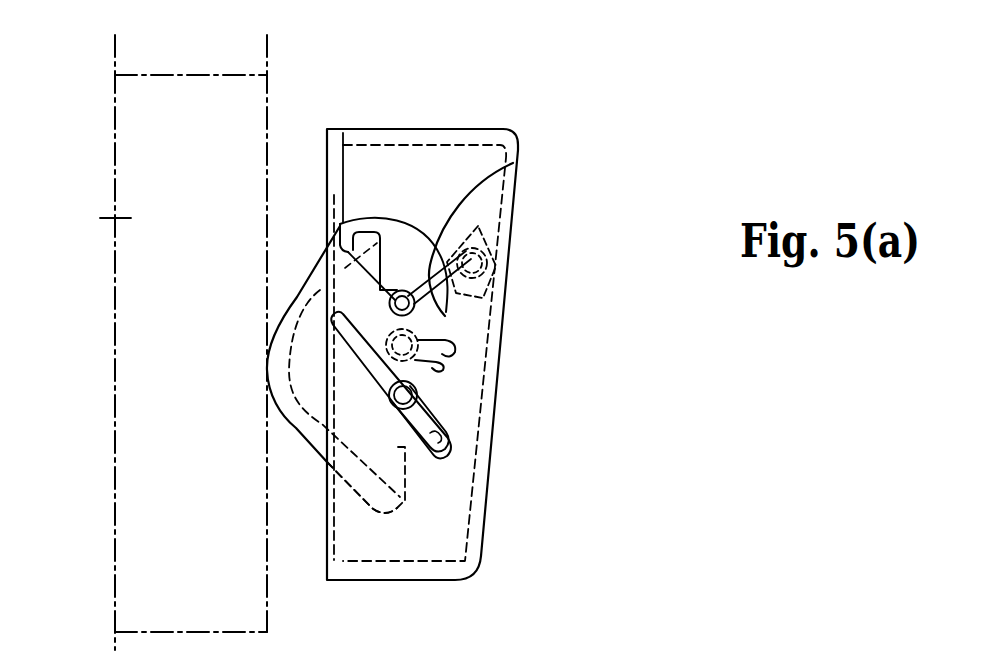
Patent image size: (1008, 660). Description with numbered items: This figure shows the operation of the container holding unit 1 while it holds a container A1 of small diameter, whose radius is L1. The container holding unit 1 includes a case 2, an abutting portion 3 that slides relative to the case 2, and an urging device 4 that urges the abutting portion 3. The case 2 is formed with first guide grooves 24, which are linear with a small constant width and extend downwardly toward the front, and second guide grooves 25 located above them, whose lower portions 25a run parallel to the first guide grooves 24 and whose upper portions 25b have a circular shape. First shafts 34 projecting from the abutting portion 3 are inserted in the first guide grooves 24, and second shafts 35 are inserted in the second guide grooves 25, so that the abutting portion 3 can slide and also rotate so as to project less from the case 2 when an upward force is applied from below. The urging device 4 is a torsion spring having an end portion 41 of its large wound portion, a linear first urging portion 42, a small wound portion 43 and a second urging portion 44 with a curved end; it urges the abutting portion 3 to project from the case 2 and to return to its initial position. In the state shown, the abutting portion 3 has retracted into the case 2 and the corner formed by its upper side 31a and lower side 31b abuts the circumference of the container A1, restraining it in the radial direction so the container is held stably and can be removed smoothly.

The container holding unit 1 is at (497, 128).
The case 2 is at (486, 547).
The abutting portion 3 is at (290, 422).
The upper side 31a is at (303, 297).
The lower side 31b is at (334, 500).
The urging device 4 is at (642, 103).
The end portion of the large wound portion 41 is at (330, 265).
The first urging portion 42 is at (492, 296).
The small wound portion 43 is at (484, 246).
The second urging portion 44 is at (513, 163).
The first guide grooves 24 is at (447, 452).
The second guide grooves 25 is at (646, 299).
The lower portions 25a is at (446, 361).
The upper portions 25b is at (452, 349).
The first shafts 34 is at (430, 417).
The second shafts 35 is at (405, 300).
The container A1 is at (112, 219).
The radius L1 is at (250, 58).